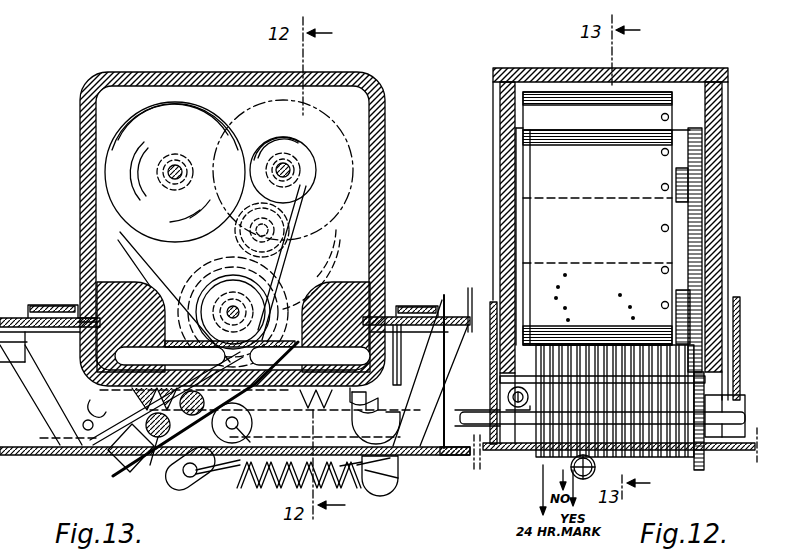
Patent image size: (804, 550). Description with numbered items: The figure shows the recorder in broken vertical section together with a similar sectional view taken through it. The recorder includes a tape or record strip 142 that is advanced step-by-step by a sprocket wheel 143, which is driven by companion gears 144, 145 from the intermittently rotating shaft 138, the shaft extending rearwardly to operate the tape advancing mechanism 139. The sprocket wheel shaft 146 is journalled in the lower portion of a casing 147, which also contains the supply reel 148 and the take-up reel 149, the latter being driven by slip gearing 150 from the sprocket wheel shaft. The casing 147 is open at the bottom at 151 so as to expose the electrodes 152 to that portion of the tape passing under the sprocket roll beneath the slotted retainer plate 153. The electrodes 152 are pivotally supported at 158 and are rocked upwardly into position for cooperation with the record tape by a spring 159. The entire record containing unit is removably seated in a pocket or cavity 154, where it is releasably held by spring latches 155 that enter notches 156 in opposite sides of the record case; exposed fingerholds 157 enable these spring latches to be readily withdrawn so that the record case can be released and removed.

In FIG. 13, the shaft 138 is at (247, 426).
In FIG. 12, the shaft 138 is at (470, 412).
In FIG. 12, the tape advancing mechanism 139 is at (493, 130).
In FIG. 13, the tape or record strip 142 is at (147, 255).
In FIG. 12, the tape or record strip 142 is at (538, 226).
In FIG. 13, the sprocket wheel 143 is at (200, 300).
In FIG. 12, the sprocket wheel 143 is at (523, 300).
In FIG. 13, the companion gear 144 is at (345, 248).
In FIG. 12, the companion gear 144 is at (704, 265).
In FIG. 13, the companion gear 145 is at (225, 482).
In FIG. 12, the companion gear 145 is at (706, 458).
In FIG. 13, the sprocket wheel shaft 146 is at (233, 306).
In FIG. 13, the casing 147 is at (82, 178).
In FIG. 13, the supply reel 148 is at (133, 138).
In FIG. 13, the take-up reel 149 is at (308, 152).
In FIG. 13, the slip gearing 150 is at (290, 230).
In FIG. 12, the slip gearing 150 is at (705, 220).
In FIG. 13, the bottom opening 151 is at (96, 398).
In FIG. 13, the electrodes 152 is at (268, 362).
In FIG. 12, the electrodes 152 is at (640, 470).
In FIG. 13, the slotted retainer plate 153 is at (185, 360).
In FIG. 13, the pocket or cavity 154 is at (380, 372).
In FIG. 13, the spring latches 155 is at (28, 320).
In FIG. 13, the notches 156 is at (30, 358).
In FIG. 13, the fingerholds 157 is at (8, 305).
In FIG. 13, the pivot 158 is at (150, 470).
In FIG. 13, the spring 159 is at (372, 496).
In FIG. 12, the spring 159 is at (568, 465).